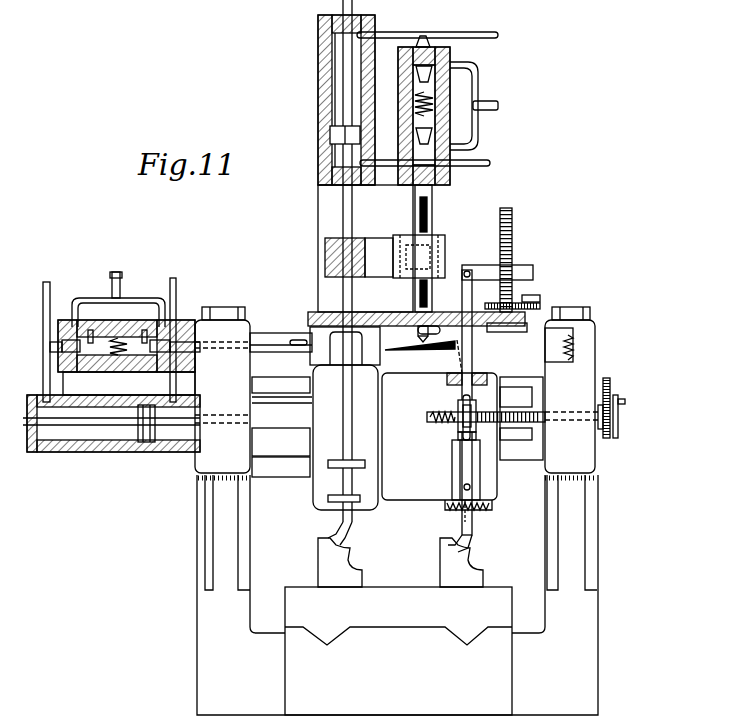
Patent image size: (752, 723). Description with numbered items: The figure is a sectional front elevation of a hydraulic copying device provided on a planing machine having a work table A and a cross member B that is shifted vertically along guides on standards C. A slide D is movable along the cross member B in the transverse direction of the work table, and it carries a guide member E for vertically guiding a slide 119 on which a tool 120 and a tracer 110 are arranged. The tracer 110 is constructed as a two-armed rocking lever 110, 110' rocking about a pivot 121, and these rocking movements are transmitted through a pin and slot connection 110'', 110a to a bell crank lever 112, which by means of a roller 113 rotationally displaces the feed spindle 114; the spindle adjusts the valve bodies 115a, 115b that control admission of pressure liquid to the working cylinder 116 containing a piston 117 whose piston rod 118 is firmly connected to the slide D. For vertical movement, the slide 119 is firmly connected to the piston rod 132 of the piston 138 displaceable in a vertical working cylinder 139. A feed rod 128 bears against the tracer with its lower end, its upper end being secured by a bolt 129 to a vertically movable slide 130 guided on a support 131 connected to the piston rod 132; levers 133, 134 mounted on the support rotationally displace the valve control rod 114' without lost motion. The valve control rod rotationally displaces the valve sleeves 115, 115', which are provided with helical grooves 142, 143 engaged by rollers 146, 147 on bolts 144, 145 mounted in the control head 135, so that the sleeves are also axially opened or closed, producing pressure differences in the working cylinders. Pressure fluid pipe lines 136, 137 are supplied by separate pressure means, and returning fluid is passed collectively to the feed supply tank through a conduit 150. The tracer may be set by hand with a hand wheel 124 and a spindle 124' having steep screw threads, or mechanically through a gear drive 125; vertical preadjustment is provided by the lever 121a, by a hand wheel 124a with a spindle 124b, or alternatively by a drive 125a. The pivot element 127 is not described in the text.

The pressure fluid pipe line 136 is at (490, 33).
The vertical working cylinder 139 is at (318, 92).
The piston 138 is at (330, 134).
The piston rod 132 is at (343, 212).
The valve sleeve 115 is at (425, 110).
The valve sleeve 115' is at (405, 115).
The roller 146 is at (436, 97).
The helical groove 142 is at (436, 74).
The helical groove 143 is at (436, 136).
The control head 135 is at (480, 96).
The roller 147 is at (472, 128).
The conduit 150 is at (498, 105).
The valve control rod 114' is at (401, 263).
The lever 133 is at (432, 231).
The support 131 is at (372, 243).
The lever 134 is at (402, 280).
The bolt 129 is at (478, 264).
The vertically movable slide 130 is at (463, 272).
The spindle 124b is at (512, 212).
The drive 125a is at (530, 300).
The hand wheel 124a is at (528, 325).
The gear drive 125 is at (607, 378).
The hand wheel 124 is at (611, 432).
The feed spindle 114 is at (281, 331).
The roller 113 is at (400, 353).
The lever 121a is at (438, 352).
The bell crank lever 112 is at (486, 363).
The feed rod 128 is at (458, 403).
The spindle 124' is at (463, 424).
The pin 110'' is at (437, 423).
The slot 110a is at (462, 441).
The rocking lever arm 110' is at (444, 470).
The pivot 127 is at (464, 488).
The slide 119 is at (320, 492).
The tool 120 is at (347, 539).
The tracer 110 is at (470, 561).
The pivot 121 is at (470, 512).
The pressure fluid pipe line 137 is at (174, 280).
The bolt 144 is at (90, 330).
The bolt 145 is at (144, 330).
The valve body 115a is at (70, 370).
The valve body 115b is at (152, 367).
The working cylinder 116 is at (93, 452).
The piston rod 118 is at (60, 428).
The piston 117 is at (143, 443).
The work table A is at (398, 651).
The cross member B is at (288, 458).
The standards C is at (210, 520).
The slide D is at (439, 436).
The guide member E is at (320, 358).